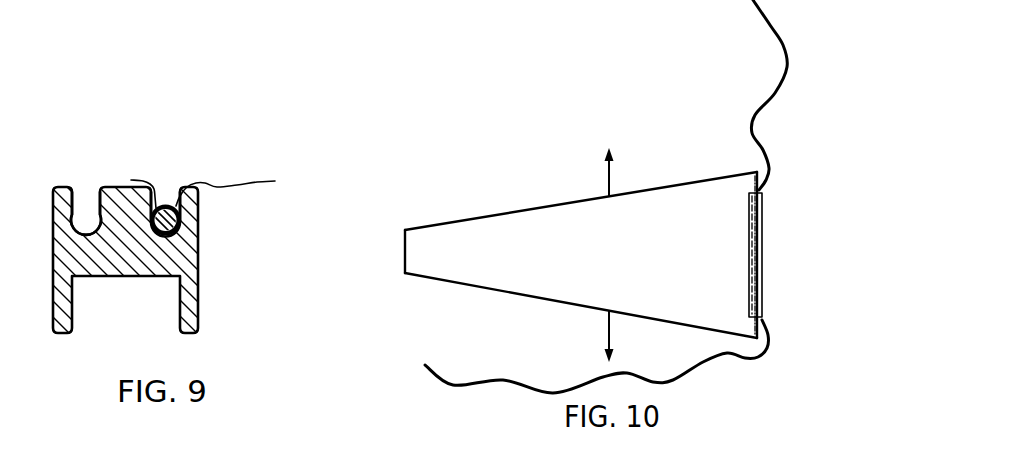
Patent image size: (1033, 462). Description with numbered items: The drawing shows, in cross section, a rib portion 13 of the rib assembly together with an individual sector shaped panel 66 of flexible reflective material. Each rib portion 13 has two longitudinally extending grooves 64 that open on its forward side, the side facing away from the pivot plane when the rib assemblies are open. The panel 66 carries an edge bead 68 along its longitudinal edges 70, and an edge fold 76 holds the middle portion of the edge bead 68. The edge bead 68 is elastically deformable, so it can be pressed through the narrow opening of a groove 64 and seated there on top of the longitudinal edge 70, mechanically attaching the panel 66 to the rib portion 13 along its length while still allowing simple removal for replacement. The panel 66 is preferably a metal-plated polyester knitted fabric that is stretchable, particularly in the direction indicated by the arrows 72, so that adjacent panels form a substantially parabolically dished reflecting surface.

In FIG. 9, the rib portion 13 is at (197, 278).
In FIG. 9, the groove 64 is at (88, 219).
In FIG. 9, the sector shaped panel 66 is at (257, 181).
In FIG. 10, the sector shaped panel 66 is at (478, 270).
In FIG. 9, the edge bead 68 is at (166, 207).
In FIG. 10, the edge bead 68 is at (782, 48).
In FIG. 10, the longitudinal edge 70 is at (663, 186).
In FIG. 10, the arrows 72 is at (603, 175).
In FIG. 10, the edge fold 76 is at (763, 263).